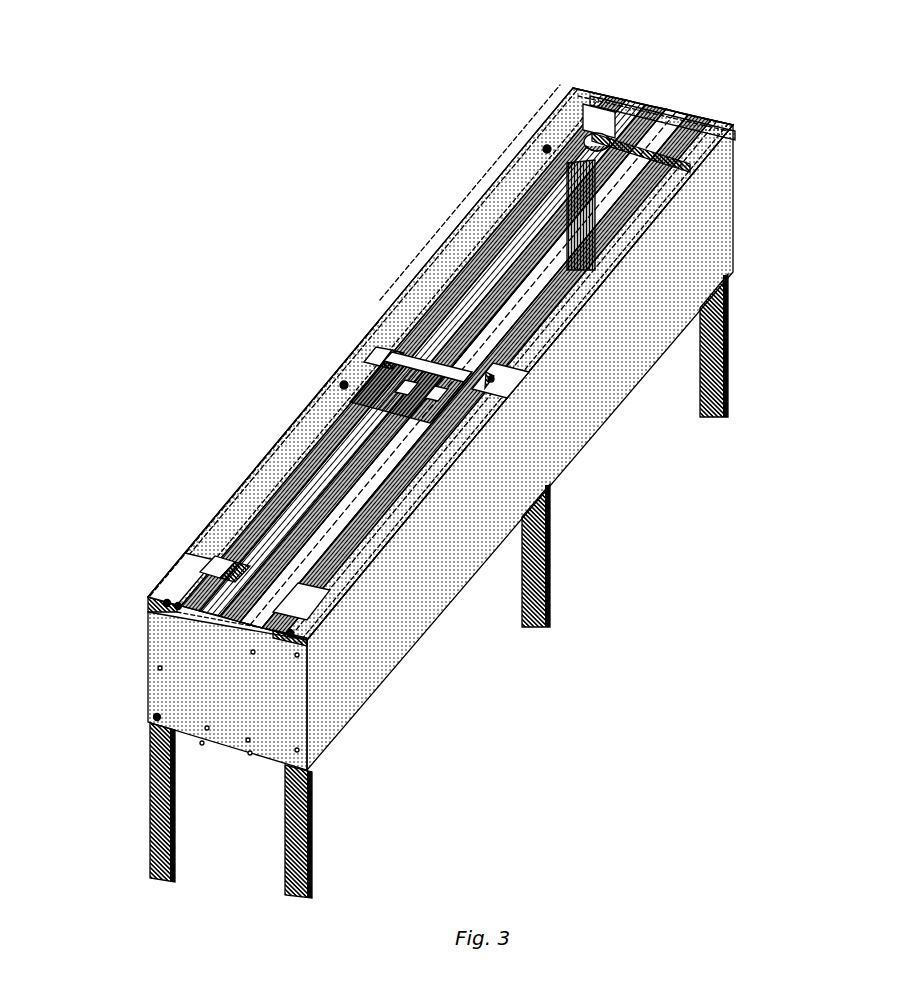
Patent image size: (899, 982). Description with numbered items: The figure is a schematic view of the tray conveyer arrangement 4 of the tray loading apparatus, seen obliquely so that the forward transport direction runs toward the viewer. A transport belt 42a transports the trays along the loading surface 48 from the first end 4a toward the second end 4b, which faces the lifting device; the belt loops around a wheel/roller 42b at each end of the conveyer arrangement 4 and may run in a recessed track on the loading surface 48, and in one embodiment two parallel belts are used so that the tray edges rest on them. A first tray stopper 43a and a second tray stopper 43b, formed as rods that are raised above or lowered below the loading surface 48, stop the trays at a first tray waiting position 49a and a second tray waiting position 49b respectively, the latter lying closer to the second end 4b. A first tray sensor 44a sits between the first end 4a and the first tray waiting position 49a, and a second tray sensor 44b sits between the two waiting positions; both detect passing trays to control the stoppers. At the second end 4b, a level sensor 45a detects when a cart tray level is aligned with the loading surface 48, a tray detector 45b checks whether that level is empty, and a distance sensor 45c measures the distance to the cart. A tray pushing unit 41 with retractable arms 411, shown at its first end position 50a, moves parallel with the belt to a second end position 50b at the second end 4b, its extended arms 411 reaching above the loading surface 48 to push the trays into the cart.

The tray conveyer arrangement 4 is at (173, 163).
The first end 4a is at (662, 108).
The second end 4b is at (258, 683).
The tray pushing unit 41 is at (389, 413).
The arms 411 is at (401, 400).
The transport belt 42a is at (556, 183).
The wheel/roller 42b is at (606, 118).
The first tray stopper 43a is at (487, 380).
The second tray stopper 43b is at (286, 610).
The first tray sensor 44a is at (540, 143).
The second tray sensor 44b is at (340, 374).
The level sensor 45a is at (276, 637).
The tray detector 45b is at (176, 609).
The distance sensor 45c is at (154, 720).
The loading surface 48 is at (584, 273).
The first tray waiting position 49a is at (498, 383).
The second tray waiting position 49b is at (307, 613).
The first end position 50a is at (452, 432).
The second end position 50b is at (315, 644).